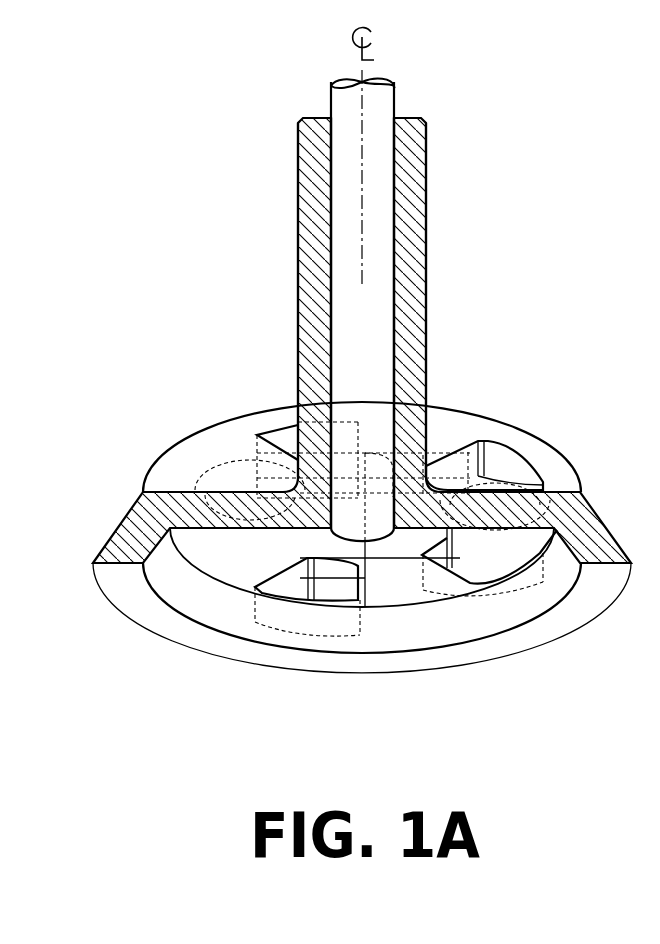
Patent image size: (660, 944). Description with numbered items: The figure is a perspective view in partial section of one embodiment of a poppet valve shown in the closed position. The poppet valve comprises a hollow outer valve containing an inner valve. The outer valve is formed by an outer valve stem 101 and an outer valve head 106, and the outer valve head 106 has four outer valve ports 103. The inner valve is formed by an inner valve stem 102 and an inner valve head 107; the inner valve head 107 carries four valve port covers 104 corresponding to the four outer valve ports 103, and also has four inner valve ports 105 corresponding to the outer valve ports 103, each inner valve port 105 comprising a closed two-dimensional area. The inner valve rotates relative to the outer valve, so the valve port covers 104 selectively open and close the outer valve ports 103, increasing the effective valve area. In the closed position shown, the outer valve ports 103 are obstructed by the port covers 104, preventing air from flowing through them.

The outer valve stem 101 is at (308, 233).
The inner valve stem 102 is at (345, 342).
The outer valve ports 103 is at (498, 457).
The valve port covers 104 is at (402, 583).
The inner valve ports 105 is at (294, 580).
The outer valve head 106 is at (215, 450).
The inner valve head 107 is at (205, 601).